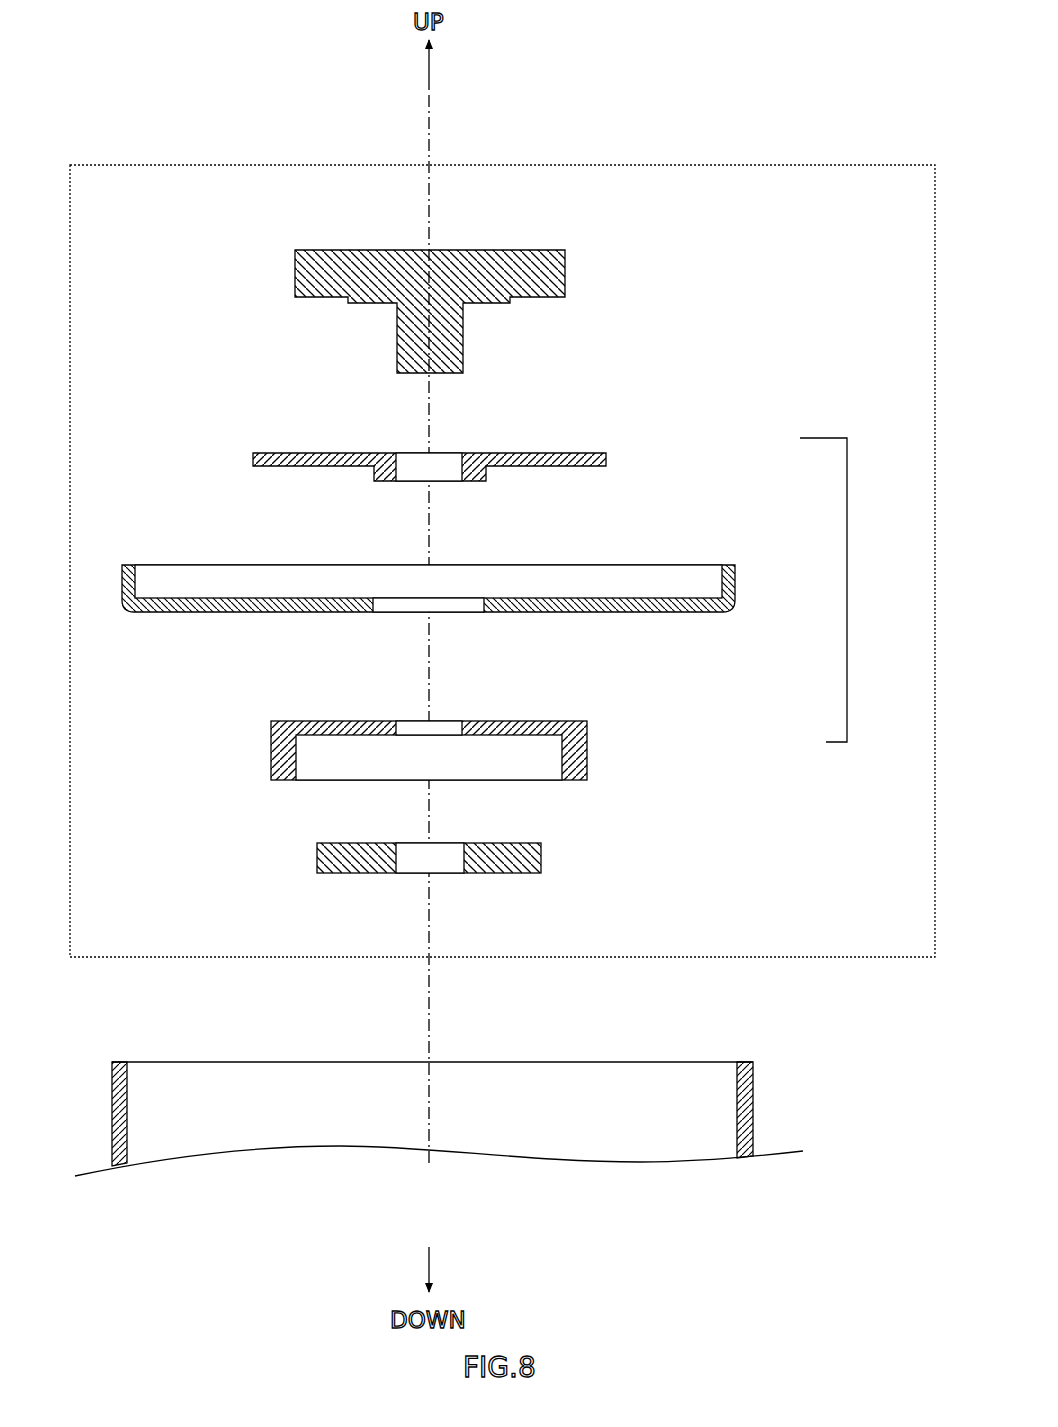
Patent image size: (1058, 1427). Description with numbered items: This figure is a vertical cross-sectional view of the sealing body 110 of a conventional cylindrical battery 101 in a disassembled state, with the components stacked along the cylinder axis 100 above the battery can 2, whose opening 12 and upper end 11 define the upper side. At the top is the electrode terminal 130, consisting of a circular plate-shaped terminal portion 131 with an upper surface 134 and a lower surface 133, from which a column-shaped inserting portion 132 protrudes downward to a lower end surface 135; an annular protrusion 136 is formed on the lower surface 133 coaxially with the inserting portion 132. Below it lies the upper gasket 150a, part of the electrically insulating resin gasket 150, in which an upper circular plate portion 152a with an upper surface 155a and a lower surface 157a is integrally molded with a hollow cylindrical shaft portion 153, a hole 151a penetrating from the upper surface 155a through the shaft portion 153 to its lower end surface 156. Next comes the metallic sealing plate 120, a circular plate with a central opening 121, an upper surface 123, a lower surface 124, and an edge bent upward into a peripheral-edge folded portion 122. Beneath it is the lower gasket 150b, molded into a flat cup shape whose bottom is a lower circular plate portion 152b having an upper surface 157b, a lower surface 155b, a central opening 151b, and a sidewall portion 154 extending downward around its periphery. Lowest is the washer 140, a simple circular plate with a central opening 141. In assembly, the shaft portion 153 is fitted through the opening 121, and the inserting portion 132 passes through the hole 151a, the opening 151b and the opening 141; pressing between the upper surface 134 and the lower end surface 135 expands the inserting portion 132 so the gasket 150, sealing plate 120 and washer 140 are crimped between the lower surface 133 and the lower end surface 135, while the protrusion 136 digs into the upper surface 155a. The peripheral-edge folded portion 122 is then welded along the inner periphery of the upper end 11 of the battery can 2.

The battery can 2 is at (450, 1074).
The upper end 11 is at (118, 1059).
The opening 12 is at (286, 1069).
The cylinder axis 100 is at (428, 117).
The cylindrical battery 101 is at (705, 103).
The sealing body 110 is at (848, 165).
The sealing plate 120 is at (660, 540).
The opening 121 is at (390, 614).
The peripheral-edge folded portion 122 is at (735, 582).
The upper surface 123 is at (194, 597).
The lower surface 124 is at (663, 617).
The electrode terminal 130 is at (589, 260).
The terminal portion 131 is at (323, 264).
The inserting portion 132 is at (452, 345).
The lower surface 133 is at (325, 302).
The upper surface 134 is at (316, 247).
The lower end surface 135 is at (452, 378).
The protrusion 136 is at (348, 306).
The washer 140 is at (562, 873).
The opening 141 is at (410, 872).
The gasket 150 is at (851, 590).
The upper gasket 150a is at (630, 458).
The lower gasket 150b is at (610, 752).
The hole 151a is at (441, 486).
The opening 151b is at (450, 719).
The upper circular plate portion 152a is at (306, 452).
The lower circular plate portion 152b is at (328, 720).
The shaft portion 153 is at (372, 481).
The sidewall portion 154 is at (282, 764).
The upper surface 155a is at (541, 451).
The lower surface 155b is at (511, 739).
The lower end surface 156 is at (389, 484).
The lower surface 157a is at (543, 468).
The upper surface 157b is at (543, 719).